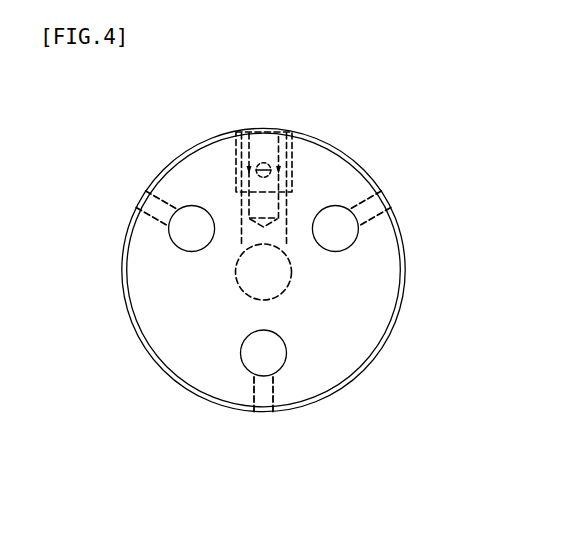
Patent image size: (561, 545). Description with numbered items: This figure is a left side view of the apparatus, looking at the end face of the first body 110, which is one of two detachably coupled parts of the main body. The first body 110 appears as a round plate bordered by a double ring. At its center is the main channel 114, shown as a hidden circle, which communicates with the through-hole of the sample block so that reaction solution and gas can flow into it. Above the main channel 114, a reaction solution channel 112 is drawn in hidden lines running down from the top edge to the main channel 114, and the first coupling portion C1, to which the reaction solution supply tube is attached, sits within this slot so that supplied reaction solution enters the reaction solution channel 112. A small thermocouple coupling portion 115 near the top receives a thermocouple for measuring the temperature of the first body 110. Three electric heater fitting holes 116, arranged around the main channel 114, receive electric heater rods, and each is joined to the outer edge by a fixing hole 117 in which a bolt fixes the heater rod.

The first body 110 is at (348, 160).
The reaction solution channel 112 is at (240, 217).
The main channel 114 is at (240, 288).
The thermocouple coupling portion 115 is at (264, 143).
The electric heater fitting holes 116 is at (179, 247).
The fixing holes 117 is at (155, 222).
The first coupling portion C1 is at (247, 172).